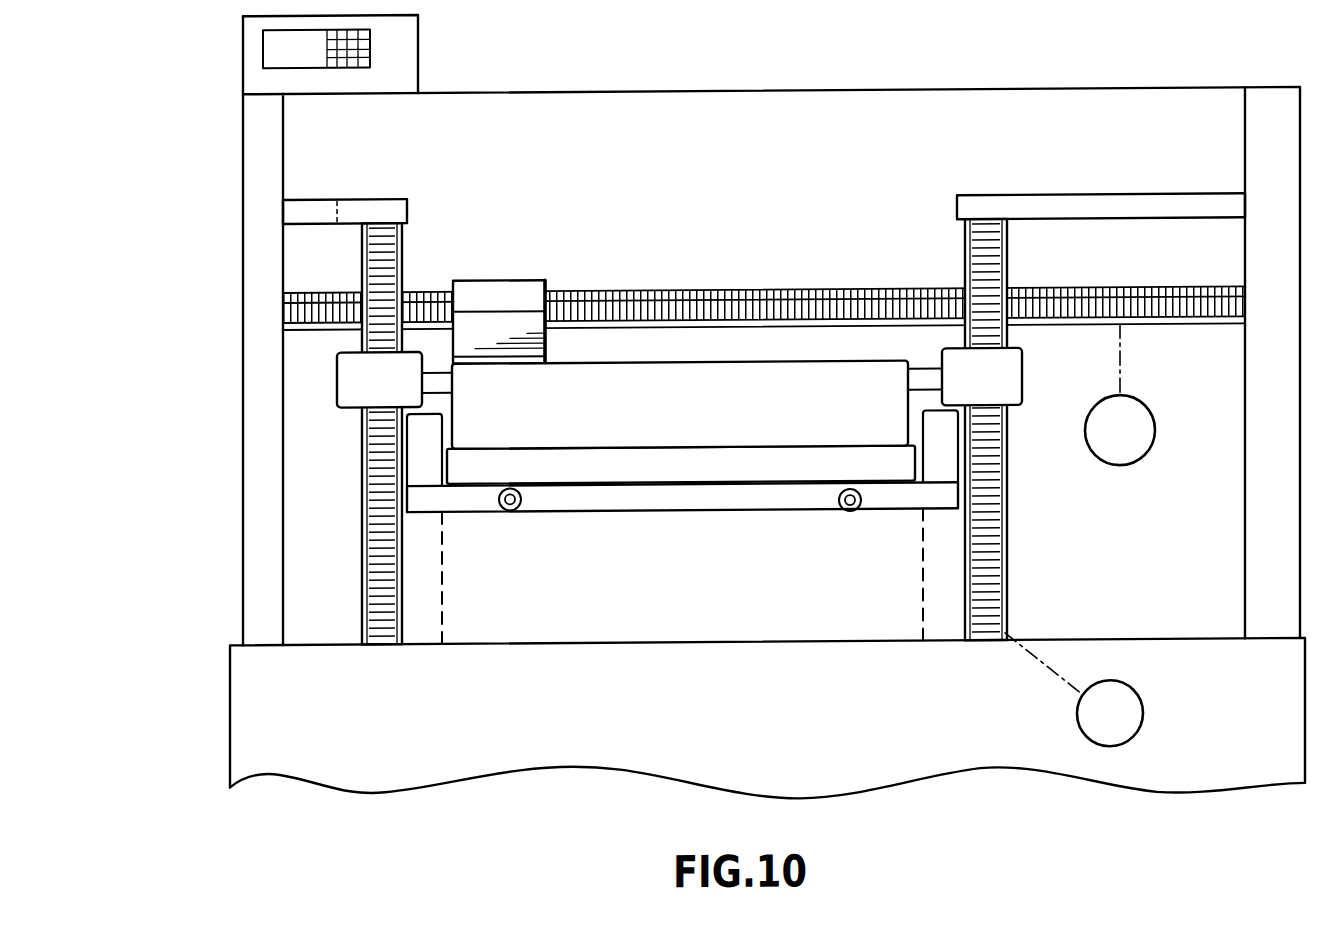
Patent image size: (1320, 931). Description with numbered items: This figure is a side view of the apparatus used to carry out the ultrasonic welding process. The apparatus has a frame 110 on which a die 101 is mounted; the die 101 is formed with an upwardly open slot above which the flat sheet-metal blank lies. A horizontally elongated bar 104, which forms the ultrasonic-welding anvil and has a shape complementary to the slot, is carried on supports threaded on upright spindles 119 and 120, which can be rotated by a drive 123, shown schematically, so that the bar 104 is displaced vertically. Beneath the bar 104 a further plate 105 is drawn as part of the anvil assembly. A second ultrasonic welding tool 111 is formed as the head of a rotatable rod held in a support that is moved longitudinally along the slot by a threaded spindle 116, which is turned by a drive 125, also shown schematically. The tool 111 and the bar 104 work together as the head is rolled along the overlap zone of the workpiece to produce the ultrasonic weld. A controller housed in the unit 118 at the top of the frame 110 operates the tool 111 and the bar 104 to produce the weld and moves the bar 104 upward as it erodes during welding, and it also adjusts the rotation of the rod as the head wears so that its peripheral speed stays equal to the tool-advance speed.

The die 101 is at (666, 496).
The bar 104 is at (677, 391).
The lower support plate 105 is at (817, 461).
The frame 110 is at (1006, 745).
The ultrasonic welding tool 111 is at (500, 265).
The threaded spindle 116 is at (599, 293).
The control unit 118 is at (398, 50).
The spindle 119 is at (367, 541).
The spindle 120 is at (1007, 550).
The drive 123 is at (1131, 719).
The drive 125 is at (1138, 443).